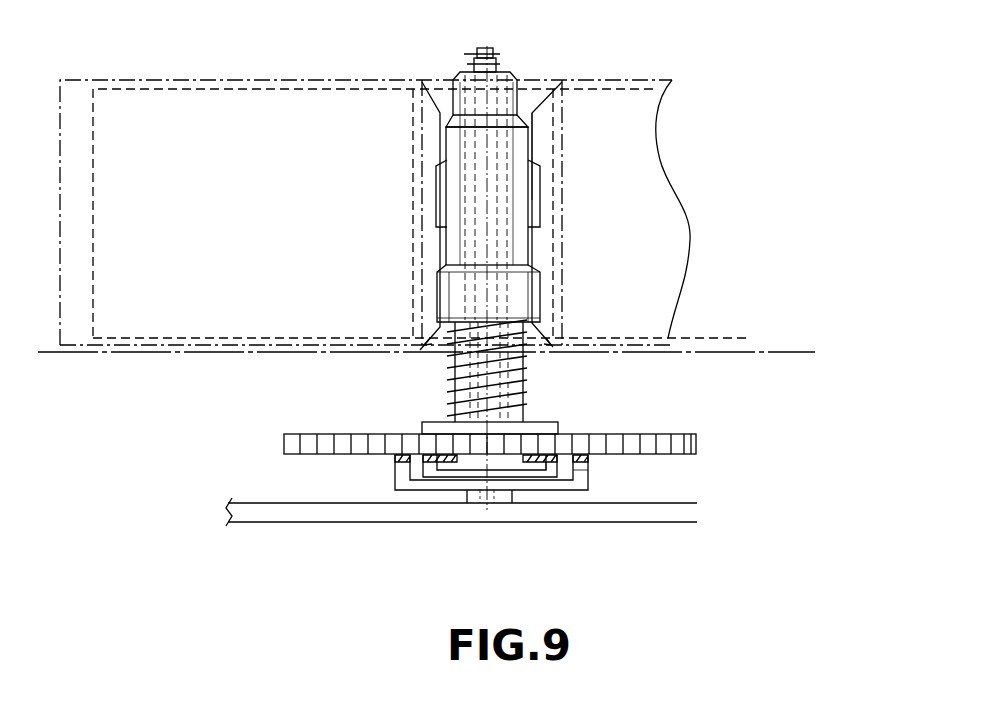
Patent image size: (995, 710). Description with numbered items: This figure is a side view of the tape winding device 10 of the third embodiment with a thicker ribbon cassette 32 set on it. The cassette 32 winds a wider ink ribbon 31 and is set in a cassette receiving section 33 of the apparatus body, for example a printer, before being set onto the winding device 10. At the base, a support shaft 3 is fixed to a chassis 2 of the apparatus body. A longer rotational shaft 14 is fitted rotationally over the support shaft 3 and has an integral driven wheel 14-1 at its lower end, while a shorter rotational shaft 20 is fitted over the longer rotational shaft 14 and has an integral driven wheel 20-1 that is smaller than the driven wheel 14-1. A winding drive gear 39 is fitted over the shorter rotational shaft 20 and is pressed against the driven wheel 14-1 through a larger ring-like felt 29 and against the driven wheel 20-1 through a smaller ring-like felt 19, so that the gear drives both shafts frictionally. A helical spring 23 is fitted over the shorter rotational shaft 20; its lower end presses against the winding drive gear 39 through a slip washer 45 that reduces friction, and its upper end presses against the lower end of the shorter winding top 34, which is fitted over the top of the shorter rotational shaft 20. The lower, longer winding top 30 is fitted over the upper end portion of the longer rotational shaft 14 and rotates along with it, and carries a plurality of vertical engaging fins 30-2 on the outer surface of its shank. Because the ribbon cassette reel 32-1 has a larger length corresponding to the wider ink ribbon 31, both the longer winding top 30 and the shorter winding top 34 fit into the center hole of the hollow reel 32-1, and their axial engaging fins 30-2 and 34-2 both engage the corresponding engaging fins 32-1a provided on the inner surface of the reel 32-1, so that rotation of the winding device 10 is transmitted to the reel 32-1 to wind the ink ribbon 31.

The tape winding device 10 is at (484, 33).
The ribbon cassette reel 32-1 is at (528, 80).
The engaging fins 32-1a is at (536, 112).
The longer winding top 30 is at (517, 145).
The vertical engaging fins 30-2 is at (541, 190).
The ribbon cassette 32 is at (165, 80).
The ink ribbon 31 is at (267, 89).
The cassette receiving section 33 is at (135, 352).
The helical spring 23 is at (445, 383).
The shorter winding top 34 is at (520, 283).
The axial engaging fins 34-2 is at (540, 308).
The slip washer 45 is at (558, 426).
The winding drive gear 39 is at (697, 444).
The larger ring-like felt 29 is at (397, 457).
The smaller ring-like felt 19 is at (455, 462).
The longer rotational shaft 14 is at (450, 490).
The driven wheel 14-1 is at (585, 479).
The chassis 2 is at (264, 513).
The shorter rotational shaft 20 is at (467, 478).
The support shaft 3 is at (495, 497).
The driven wheel 20-1 is at (540, 490).